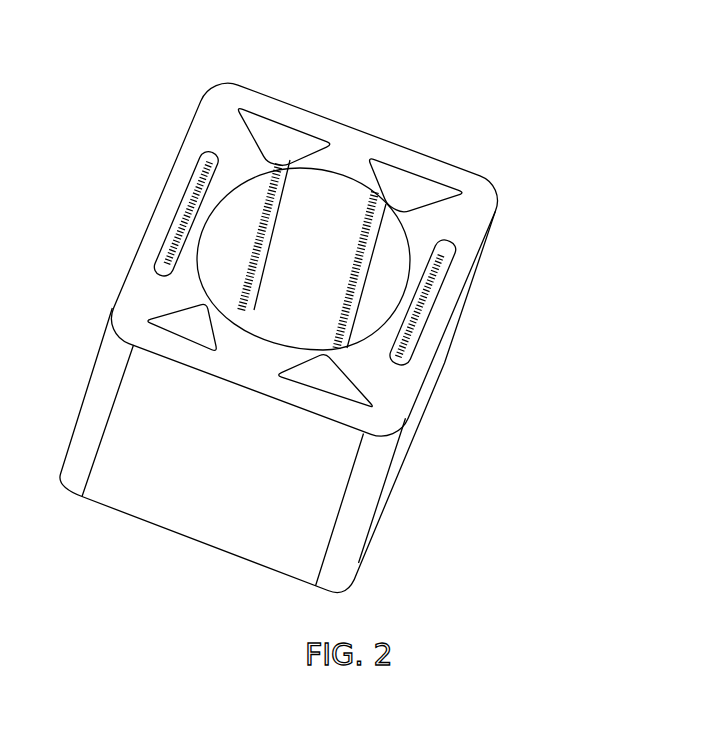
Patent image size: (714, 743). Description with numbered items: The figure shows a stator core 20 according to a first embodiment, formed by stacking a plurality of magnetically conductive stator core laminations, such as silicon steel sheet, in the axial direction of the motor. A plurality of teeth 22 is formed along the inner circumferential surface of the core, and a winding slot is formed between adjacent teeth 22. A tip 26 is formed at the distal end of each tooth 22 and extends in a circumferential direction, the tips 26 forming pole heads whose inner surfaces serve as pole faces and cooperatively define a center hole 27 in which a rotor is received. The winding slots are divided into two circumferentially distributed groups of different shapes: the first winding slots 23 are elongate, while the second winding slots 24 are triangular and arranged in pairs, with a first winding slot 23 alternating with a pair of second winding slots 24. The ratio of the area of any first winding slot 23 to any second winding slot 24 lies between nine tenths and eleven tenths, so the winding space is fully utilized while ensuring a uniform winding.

The stator core 20 is at (448, 112).
The teeth 22 is at (433, 227).
The first winding slots 23 is at (172, 240).
The second winding slots 24 is at (380, 172).
The tip 26 is at (373, 348).
The center hole 27 is at (258, 237).